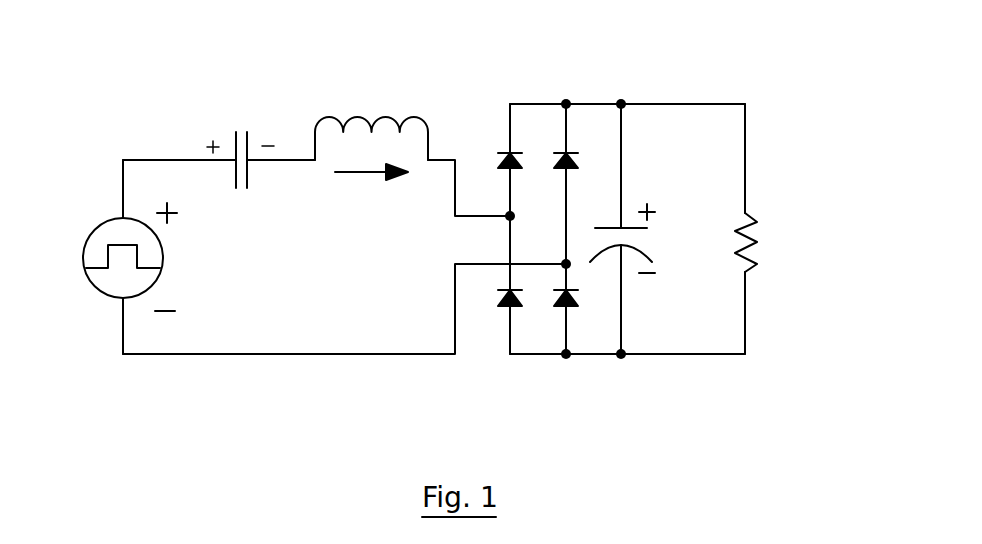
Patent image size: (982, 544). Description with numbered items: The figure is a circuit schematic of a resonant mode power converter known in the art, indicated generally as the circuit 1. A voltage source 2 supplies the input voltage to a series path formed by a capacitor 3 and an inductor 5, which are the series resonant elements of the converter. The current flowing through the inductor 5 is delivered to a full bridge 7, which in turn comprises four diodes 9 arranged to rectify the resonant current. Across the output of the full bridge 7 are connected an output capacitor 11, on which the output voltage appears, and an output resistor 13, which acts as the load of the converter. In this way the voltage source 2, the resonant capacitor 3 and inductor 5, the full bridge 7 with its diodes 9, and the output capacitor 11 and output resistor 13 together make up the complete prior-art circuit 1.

The circuit 1 is at (745, 57).
The voltage source 2 is at (83, 253).
The capacitor 3 is at (235, 139).
The inductor 5 is at (323, 119).
The full bridge 7 is at (622, 70).
The diodes 9 is at (498, 300).
The output capacitor 11 is at (623, 222).
The output resistor 13 is at (757, 241).